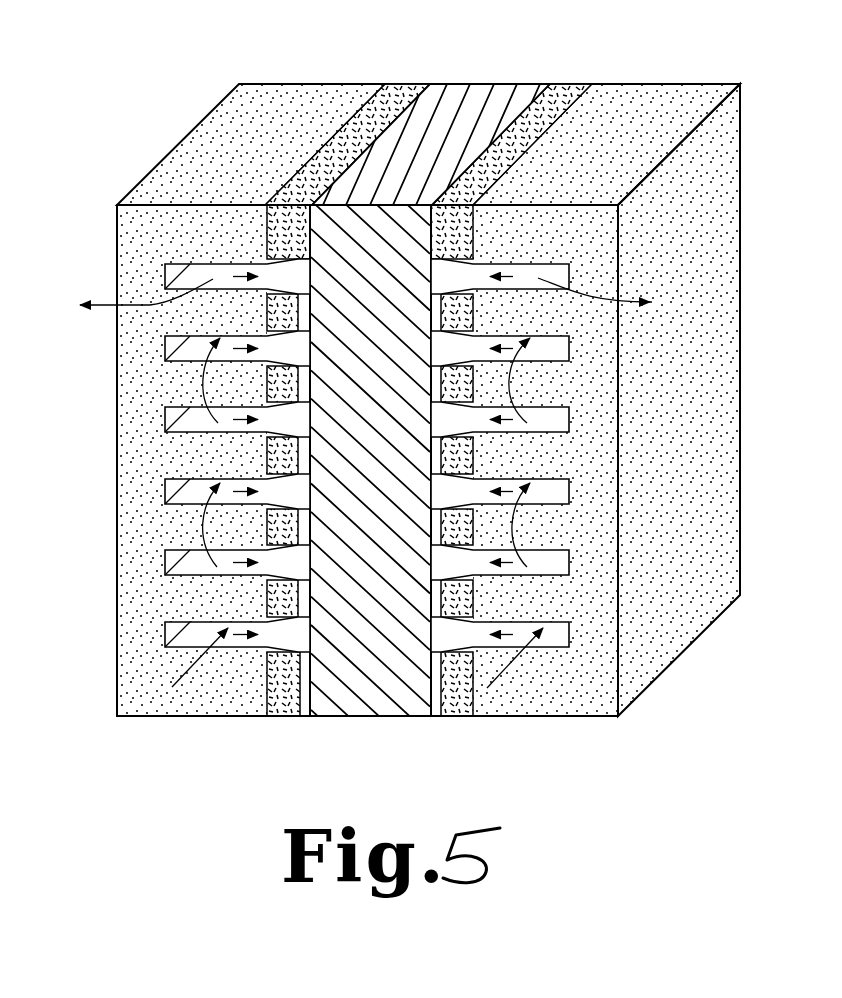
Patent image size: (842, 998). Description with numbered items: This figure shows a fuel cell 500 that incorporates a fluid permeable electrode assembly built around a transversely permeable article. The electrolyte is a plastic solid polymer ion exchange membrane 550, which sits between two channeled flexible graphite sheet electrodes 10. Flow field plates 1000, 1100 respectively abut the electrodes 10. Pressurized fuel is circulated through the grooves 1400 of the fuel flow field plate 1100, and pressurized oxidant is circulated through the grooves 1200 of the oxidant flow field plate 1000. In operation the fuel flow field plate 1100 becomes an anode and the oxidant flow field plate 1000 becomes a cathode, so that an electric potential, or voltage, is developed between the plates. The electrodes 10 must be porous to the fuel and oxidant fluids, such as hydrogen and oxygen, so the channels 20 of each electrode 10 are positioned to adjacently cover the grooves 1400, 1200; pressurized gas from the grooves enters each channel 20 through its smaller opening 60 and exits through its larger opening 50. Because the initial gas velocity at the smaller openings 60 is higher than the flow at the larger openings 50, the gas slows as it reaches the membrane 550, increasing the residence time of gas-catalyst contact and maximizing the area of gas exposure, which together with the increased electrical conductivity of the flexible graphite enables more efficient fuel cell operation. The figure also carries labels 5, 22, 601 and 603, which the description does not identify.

The heat transfer/separation slab 5 is at (305, 523).
The channeled flexible graphite sheet electrode 10 is at (278, 718).
The channel 20 is at (266, 473).
The porous strip on top face 22 is at (357, 113).
The larger opening 50 is at (347, 147).
The smaller opening 60 is at (210, 717).
The fuel cell 500 is at (575, 67).
The solid polymer ion exchange membrane 550 is at (497, 82).
The first interface wall 601 is at (305, 718).
The second interface wall 603 is at (423, 706).
The oxidant flow field plate 1000 is at (722, 236).
The fuel flow field plate 1100 is at (194, 130).
The grooves 1200 is at (557, 565).
The grooves 1400 is at (268, 436).